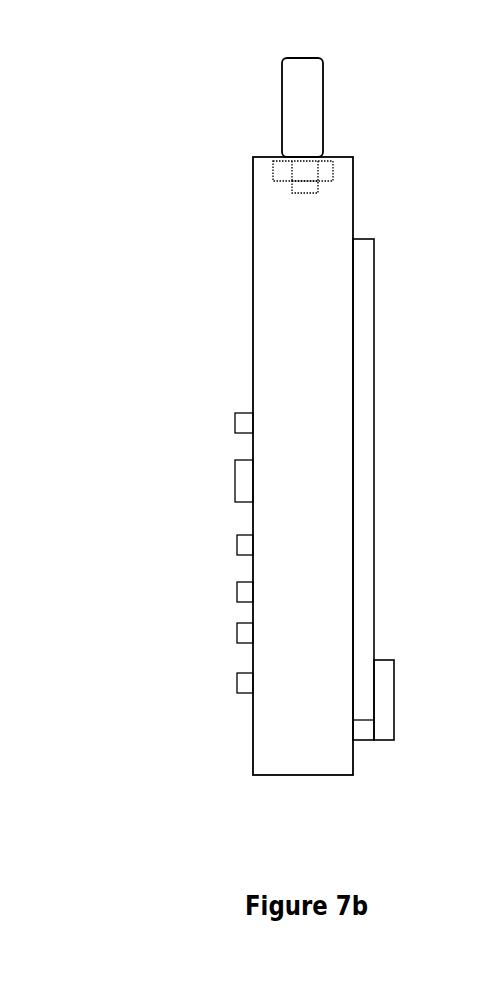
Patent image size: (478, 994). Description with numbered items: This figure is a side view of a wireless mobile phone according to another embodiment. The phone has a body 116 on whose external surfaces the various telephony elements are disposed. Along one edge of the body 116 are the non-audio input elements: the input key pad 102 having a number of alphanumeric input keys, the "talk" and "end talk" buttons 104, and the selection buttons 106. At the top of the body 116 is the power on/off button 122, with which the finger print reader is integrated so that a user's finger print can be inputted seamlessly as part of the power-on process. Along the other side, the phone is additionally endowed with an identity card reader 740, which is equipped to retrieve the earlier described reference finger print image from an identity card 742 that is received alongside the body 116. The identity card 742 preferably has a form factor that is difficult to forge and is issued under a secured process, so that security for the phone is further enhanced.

The input key pad 102 is at (225, 552).
The "talk" and "end talk" buttons 104 is at (245, 477).
The selection buttons 106 is at (235, 413).
The body 116 is at (333, 352).
The power on/off button 122 is at (333, 178).
The identity card reader 740 is at (395, 697).
The identity card 742 is at (373, 297).